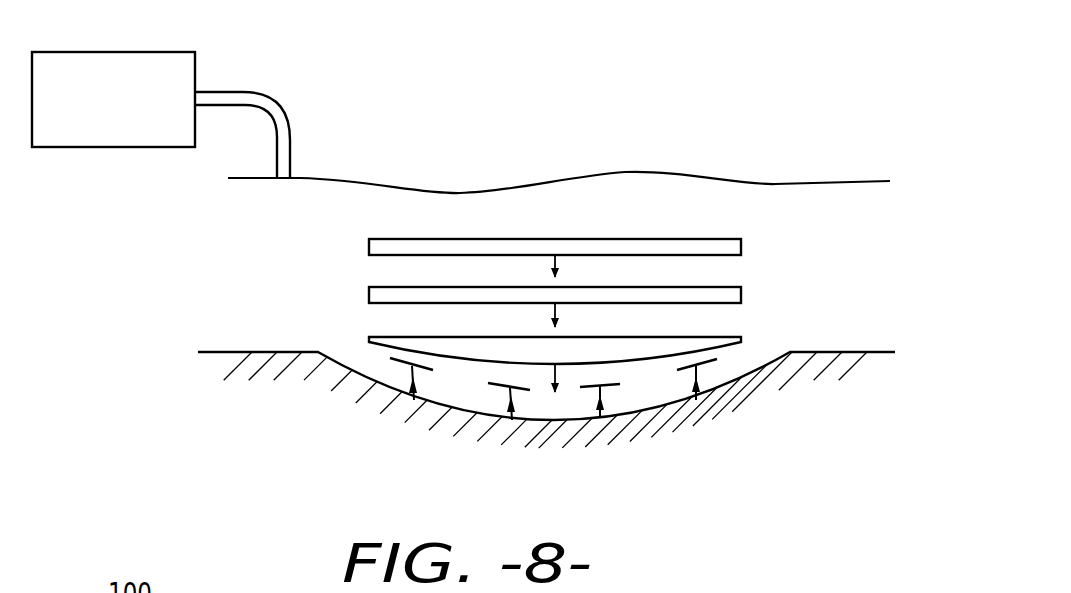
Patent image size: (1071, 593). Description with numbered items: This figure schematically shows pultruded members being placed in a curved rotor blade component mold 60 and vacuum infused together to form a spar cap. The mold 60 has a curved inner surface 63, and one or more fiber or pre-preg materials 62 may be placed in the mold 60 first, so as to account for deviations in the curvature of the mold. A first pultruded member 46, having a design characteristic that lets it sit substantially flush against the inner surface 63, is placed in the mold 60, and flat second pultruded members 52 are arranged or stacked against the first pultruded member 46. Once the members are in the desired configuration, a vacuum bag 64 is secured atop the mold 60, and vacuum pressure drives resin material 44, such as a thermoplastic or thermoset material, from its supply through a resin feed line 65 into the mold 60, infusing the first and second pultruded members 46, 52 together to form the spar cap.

The resin material 44 is at (116, 52).
The resin feed line 65 is at (246, 91).
The vacuum bag 64 is at (784, 183).
The second pultruded member 52 is at (648, 238).
The first pultruded member 46 is at (722, 331).
The curved rotor blade component mold 60 is at (236, 344).
The inner surface 63 is at (332, 352).
The fiber or pre-preg materials 62 is at (490, 395).